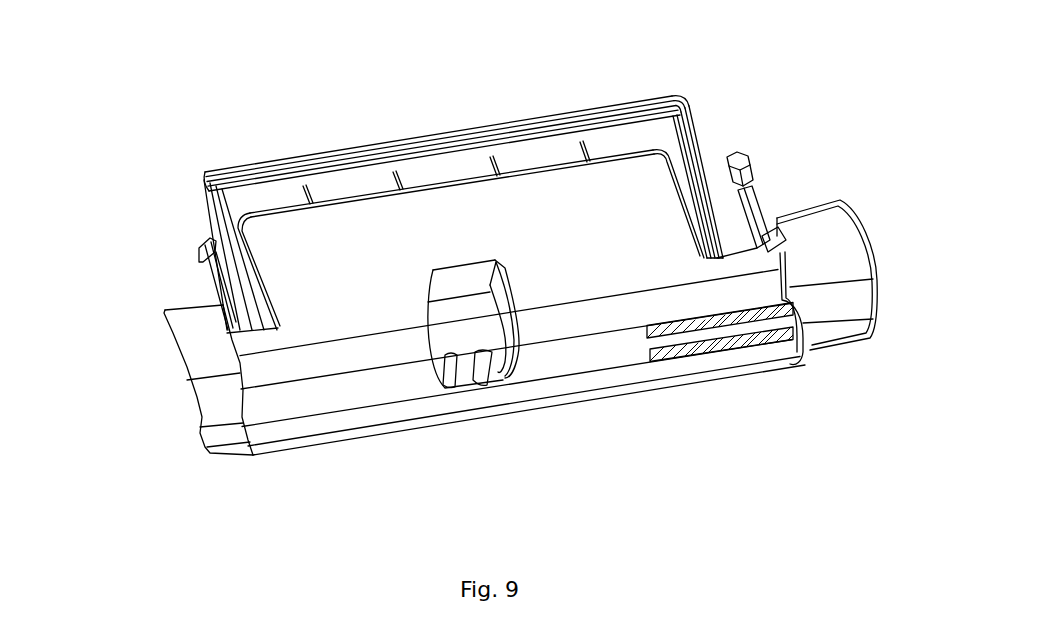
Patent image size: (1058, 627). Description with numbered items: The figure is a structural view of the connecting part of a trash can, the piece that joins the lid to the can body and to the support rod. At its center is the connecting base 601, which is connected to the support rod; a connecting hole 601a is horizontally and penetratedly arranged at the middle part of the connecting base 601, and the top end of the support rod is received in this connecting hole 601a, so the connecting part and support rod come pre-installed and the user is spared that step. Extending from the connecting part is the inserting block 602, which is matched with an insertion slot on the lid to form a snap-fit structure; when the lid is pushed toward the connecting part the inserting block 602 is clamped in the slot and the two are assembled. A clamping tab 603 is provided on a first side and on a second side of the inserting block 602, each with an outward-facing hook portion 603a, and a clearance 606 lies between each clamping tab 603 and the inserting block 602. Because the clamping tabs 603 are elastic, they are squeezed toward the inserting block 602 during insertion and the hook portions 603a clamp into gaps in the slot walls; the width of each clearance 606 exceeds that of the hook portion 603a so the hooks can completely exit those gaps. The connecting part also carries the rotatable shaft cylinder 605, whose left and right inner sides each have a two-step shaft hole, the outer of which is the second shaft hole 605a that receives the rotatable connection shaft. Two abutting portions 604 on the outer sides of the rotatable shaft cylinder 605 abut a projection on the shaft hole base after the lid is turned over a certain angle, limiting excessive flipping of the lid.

The connecting base 601 is at (460, 297).
The connecting hole 601a is at (493, 380).
The inserting block 602 is at (540, 153).
The clamping tab 603 is at (748, 160).
The hook portion 603a is at (198, 268).
The abutting portion 604 is at (830, 290).
The rotatable shaft cylinder 605 is at (587, 357).
The second shaft hole 605a is at (780, 323).
The clearance 606 is at (795, 263).